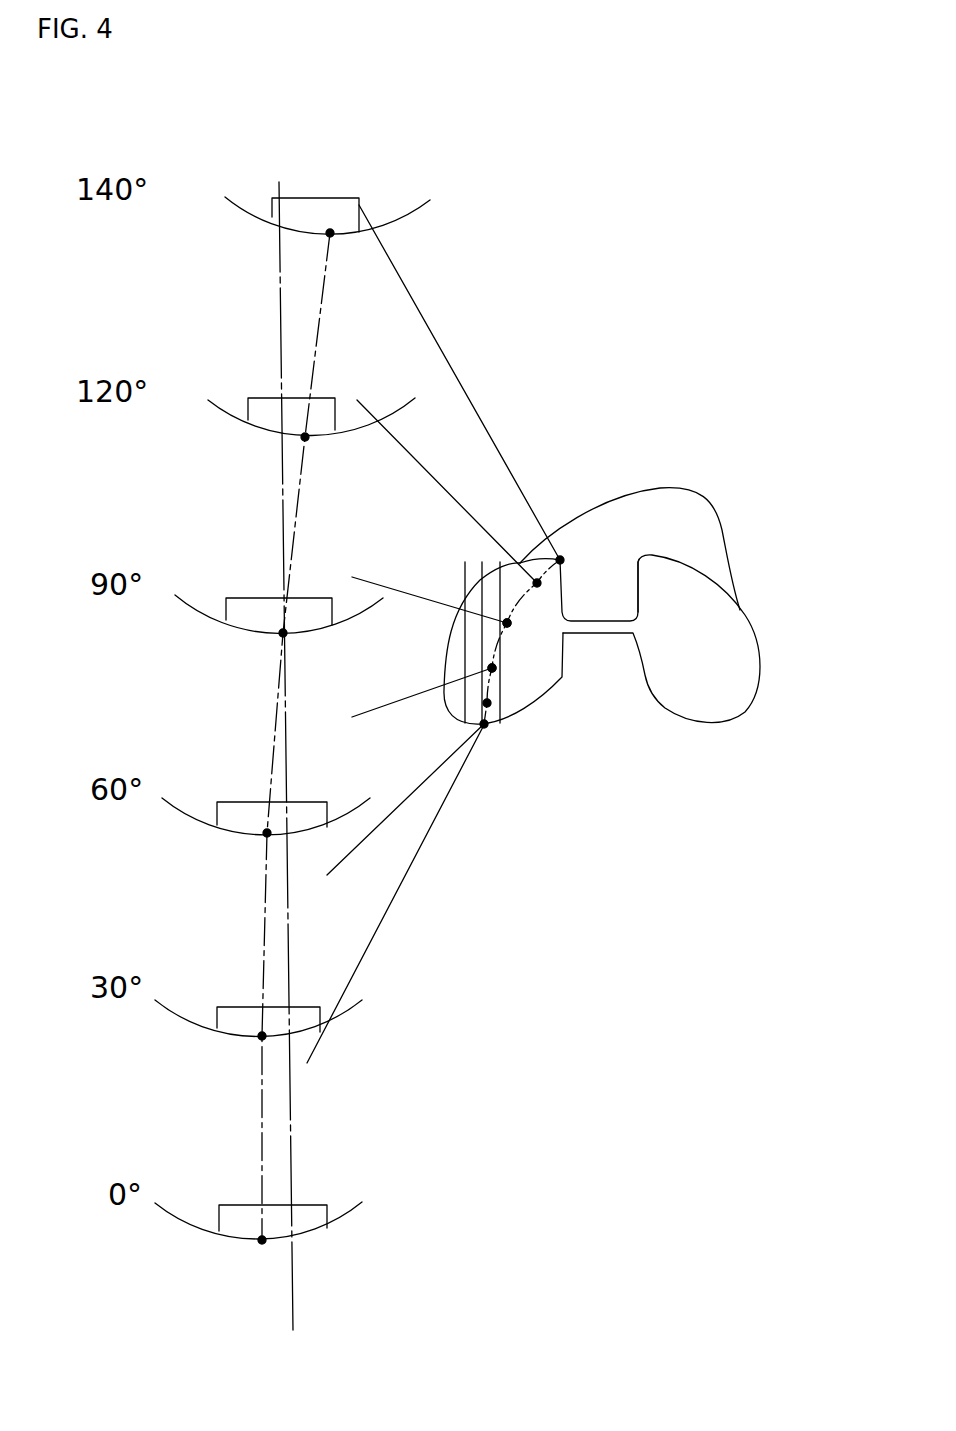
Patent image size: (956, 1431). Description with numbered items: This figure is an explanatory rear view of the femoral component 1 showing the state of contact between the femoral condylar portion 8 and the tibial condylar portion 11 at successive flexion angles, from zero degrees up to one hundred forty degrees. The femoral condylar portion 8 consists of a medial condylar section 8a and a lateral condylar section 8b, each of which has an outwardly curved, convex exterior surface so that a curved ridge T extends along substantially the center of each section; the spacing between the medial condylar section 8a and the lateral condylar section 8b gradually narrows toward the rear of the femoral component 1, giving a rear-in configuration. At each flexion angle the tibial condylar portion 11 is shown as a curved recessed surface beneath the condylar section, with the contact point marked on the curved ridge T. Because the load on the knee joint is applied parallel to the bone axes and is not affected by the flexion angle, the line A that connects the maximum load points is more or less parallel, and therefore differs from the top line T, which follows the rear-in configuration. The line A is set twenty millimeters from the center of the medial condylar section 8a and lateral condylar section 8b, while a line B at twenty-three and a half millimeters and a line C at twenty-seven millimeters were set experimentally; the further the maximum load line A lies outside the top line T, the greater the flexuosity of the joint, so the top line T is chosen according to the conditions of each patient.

The femoral component 1 is at (738, 578).
The femoral condylar portion 8 is at (529, 850).
The medial condylar section 8a is at (515, 703).
The lateral condylar section 8b is at (672, 718).
The tibial condylar portion 11 is at (333, 1233).
The line A is at (283, 685).
The line B is at (480, 632).
The line C is at (463, 670).
The curved ridge (top line) T is at (273, 720).